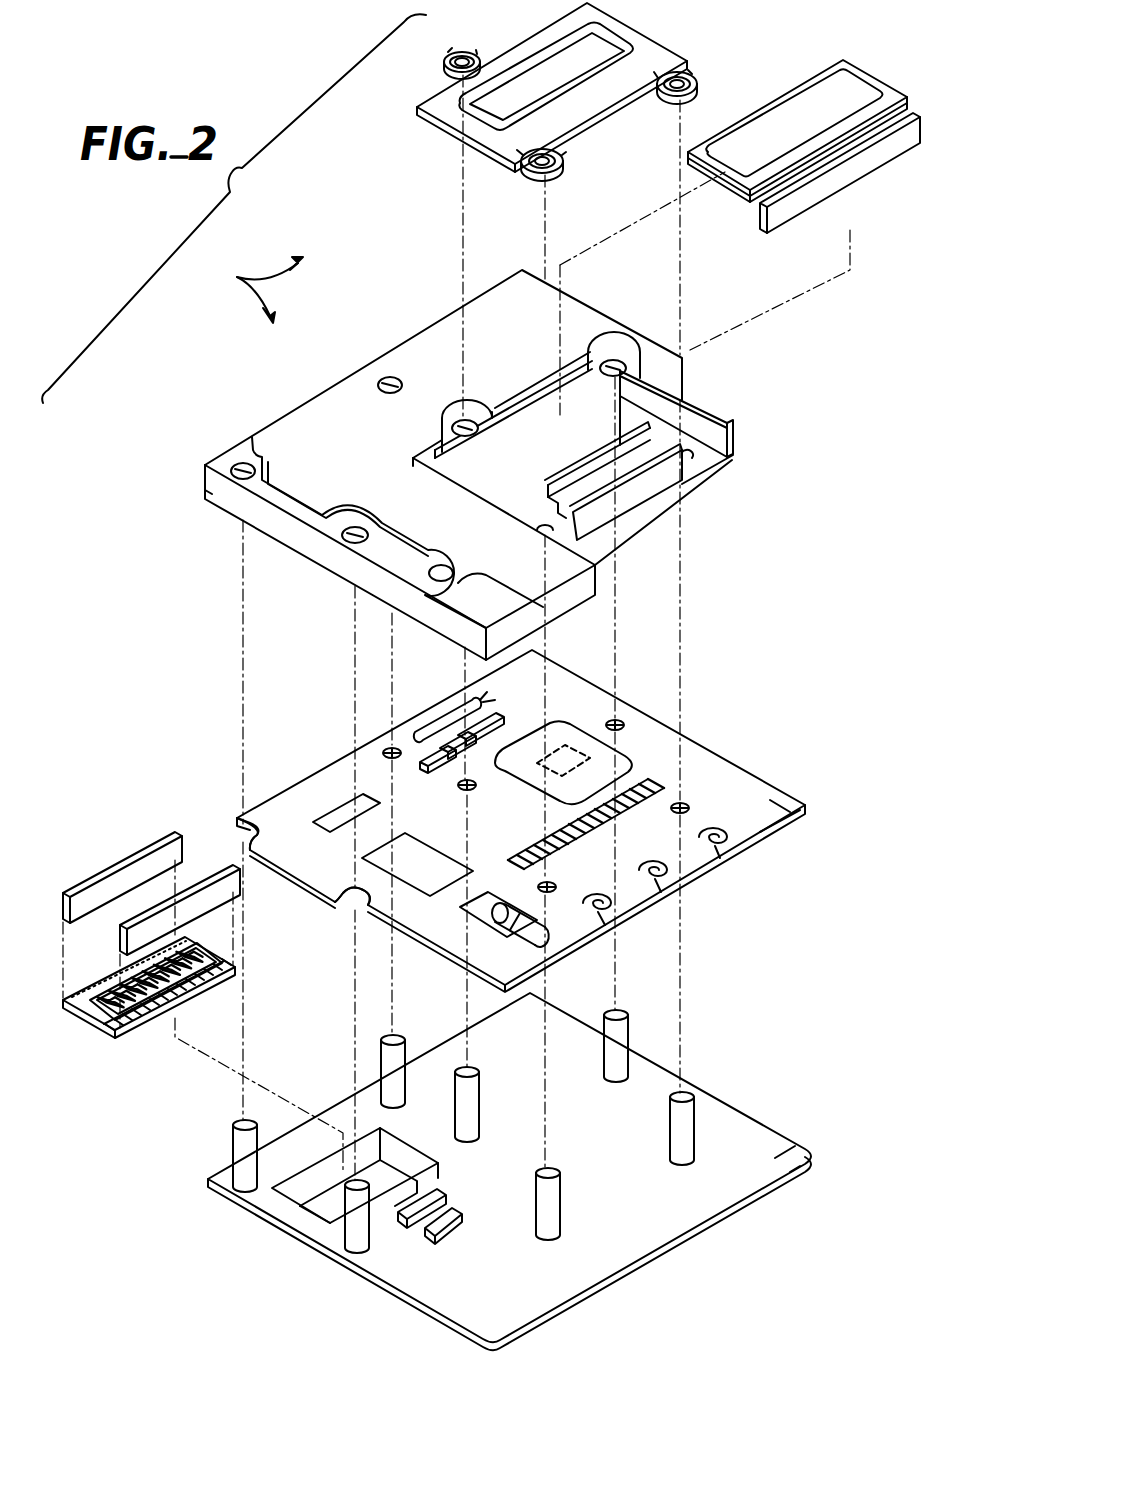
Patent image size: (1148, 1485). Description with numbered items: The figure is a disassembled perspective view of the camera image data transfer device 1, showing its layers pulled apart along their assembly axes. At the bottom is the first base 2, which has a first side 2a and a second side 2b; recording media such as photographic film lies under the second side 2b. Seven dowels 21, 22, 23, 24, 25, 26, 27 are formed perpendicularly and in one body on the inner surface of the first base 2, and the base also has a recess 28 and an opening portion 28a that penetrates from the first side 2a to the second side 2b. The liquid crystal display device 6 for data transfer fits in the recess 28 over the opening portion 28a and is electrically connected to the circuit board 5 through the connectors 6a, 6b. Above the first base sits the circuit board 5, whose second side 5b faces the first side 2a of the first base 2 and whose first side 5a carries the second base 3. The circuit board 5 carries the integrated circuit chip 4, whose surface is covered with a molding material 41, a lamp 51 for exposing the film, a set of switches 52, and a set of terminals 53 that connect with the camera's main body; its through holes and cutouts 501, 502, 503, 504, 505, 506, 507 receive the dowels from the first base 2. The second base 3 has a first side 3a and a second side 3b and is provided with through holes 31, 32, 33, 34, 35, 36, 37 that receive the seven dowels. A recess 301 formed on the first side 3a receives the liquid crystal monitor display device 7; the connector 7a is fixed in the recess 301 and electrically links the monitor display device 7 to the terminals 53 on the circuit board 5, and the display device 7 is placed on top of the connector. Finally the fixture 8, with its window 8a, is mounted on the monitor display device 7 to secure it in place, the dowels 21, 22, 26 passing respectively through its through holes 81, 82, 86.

The image data transfer device 1 is at (260, 290).
The first base 2 is at (515, 1171).
The first side of first base 2a is at (785, 1160).
The second side of first base 2b is at (793, 1180).
The second base 3 is at (471, 465).
The first side of second base 3a is at (335, 418).
The second side of second base 3b is at (238, 505).
The integrated circuit chip 4 is at (593, 757).
The circuit board 5 is at (514, 821).
The first side of circuit board 5a is at (806, 802).
The second side of circuit board 5b is at (792, 826).
The liquid crystal display device for data transfer 6 is at (148, 933).
The connector 6a is at (108, 887).
The connector 6b is at (217, 890).
The liquid crystal monitor display device 7 is at (813, 108).
The connector 7a is at (840, 175).
The fixture 8 is at (539, 96).
The display window 8a is at (577, 53).
The dowel 21 is at (688, 1120).
The dowel 22 is at (552, 1197).
The dowel 23 is at (357, 1230).
The dowel 24 is at (243, 1155).
The dowel 25 is at (392, 1077).
The dowel 26 is at (463, 1108).
The dowel 27 is at (622, 1043).
The recess 28 is at (307, 1182).
The opening portion 28a is at (328, 1212).
The through hole 31 is at (692, 455).
The through hole 32 is at (565, 525).
The through hole 33 is at (347, 538).
The through hole 34 is at (236, 468).
The through hole 35 is at (387, 380).
The through hole 36 is at (463, 418).
The through hole 37 is at (613, 360).
The molding material 41 is at (600, 724).
The lamp 51 is at (505, 913).
The set of switches 52 is at (615, 905).
The set of terminals 53 is at (663, 785).
The through hole 81 is at (648, 58).
The through hole 82 is at (566, 160).
The through hole 86 is at (440, 65).
The recess 301 is at (700, 392).
The through hole or cutout 501 is at (688, 805).
The through hole or cutout 502 is at (557, 890).
The through hole or cutout 503 is at (352, 903).
The through hole or cutout 504 is at (240, 828).
The through hole or cutout 505 is at (390, 748).
The through hole or cutout 506 is at (458, 785).
The through hole or cutout 507 is at (615, 718).